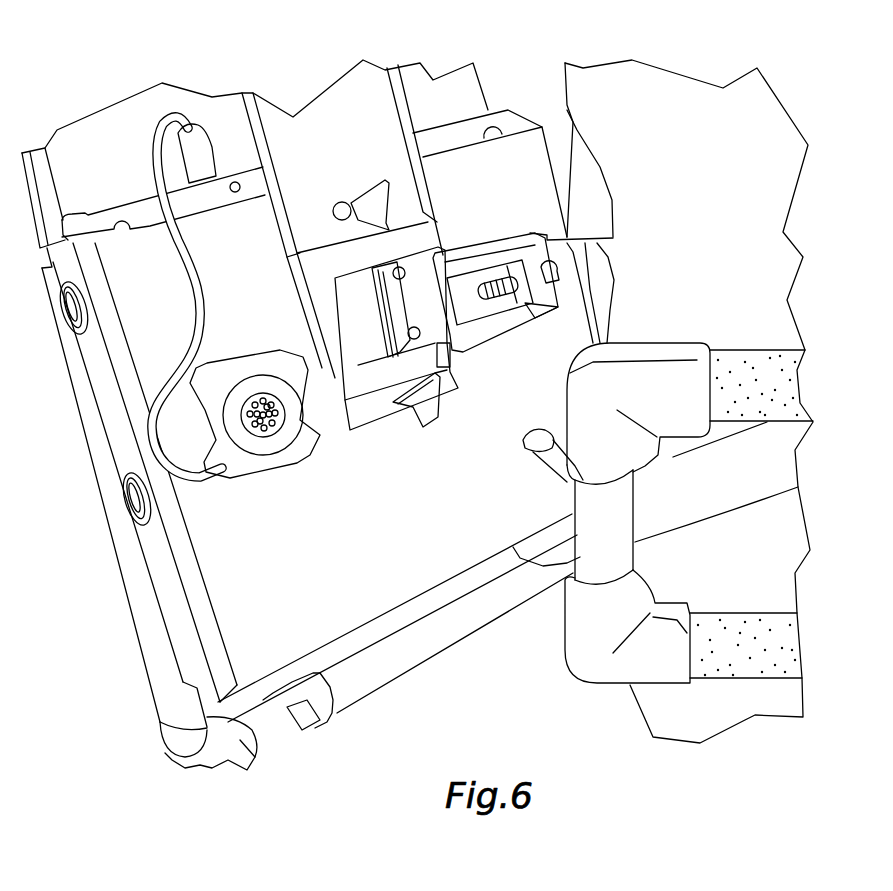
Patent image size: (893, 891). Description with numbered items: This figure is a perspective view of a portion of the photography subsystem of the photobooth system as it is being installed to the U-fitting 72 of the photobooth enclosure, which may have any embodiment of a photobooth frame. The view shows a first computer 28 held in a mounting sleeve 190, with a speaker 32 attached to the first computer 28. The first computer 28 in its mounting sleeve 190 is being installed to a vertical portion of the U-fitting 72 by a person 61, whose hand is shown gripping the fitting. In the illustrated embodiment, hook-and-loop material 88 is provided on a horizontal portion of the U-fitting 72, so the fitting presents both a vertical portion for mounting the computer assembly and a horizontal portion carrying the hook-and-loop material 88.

The first computer 28 is at (97, 160).
The mounting sleeve 190 is at (445, 185).
The person 61 is at (683, 152).
The speaker 32 is at (240, 471).
The U-fitting 72 is at (580, 585).
The hook-and-loop material 88 is at (735, 653).